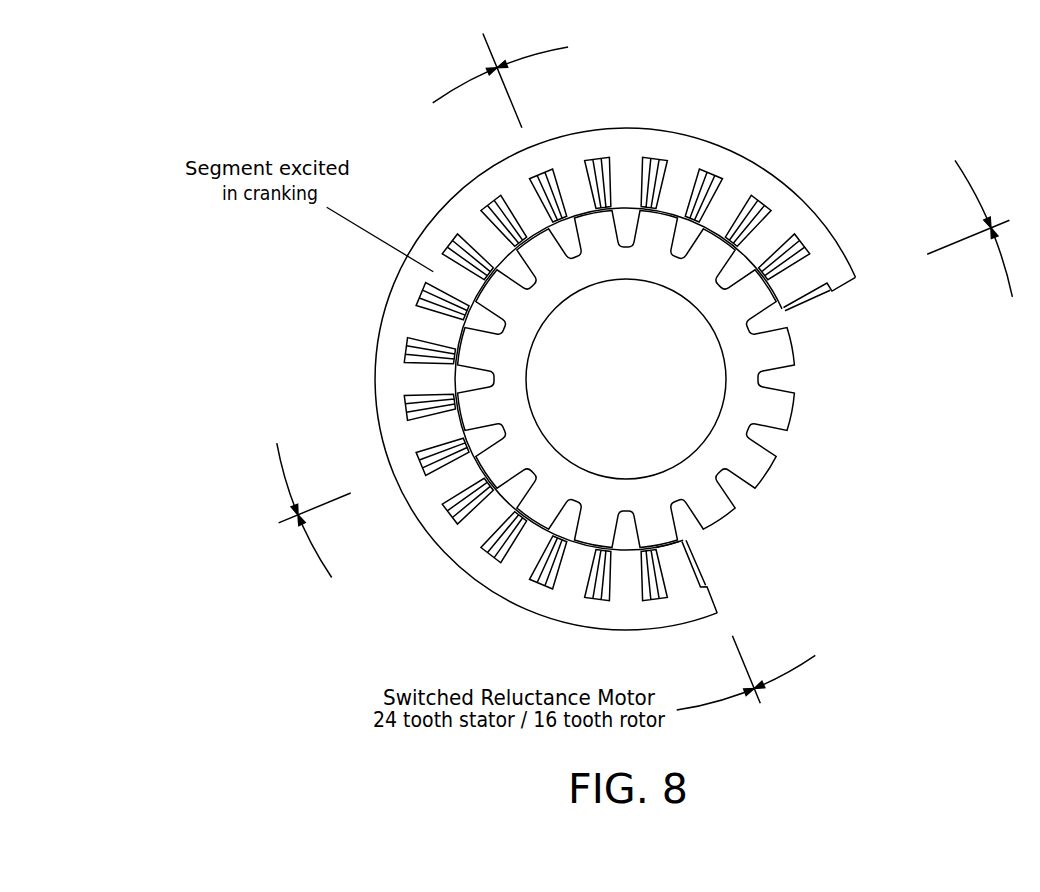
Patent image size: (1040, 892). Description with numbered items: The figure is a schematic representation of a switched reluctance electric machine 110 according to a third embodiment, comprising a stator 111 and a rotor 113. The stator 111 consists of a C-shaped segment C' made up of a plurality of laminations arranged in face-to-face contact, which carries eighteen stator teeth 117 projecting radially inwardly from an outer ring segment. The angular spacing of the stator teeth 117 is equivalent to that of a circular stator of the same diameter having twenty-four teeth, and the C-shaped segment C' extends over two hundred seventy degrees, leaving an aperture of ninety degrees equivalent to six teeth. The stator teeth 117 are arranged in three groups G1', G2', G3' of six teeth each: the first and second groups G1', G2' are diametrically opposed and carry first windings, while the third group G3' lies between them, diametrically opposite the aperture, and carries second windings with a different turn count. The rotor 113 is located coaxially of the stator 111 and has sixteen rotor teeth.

The switched reluctance electric machine 110 is at (645, 372).
The stator 111 is at (645, 372).
The rotor 113 is at (837, 435).
The stator teeth 117 is at (678, 569).
The first group G1' is at (723, 165).
The second group G2' is at (628, 592).
The third group G3' is at (424, 373).
The C-shaped segment C' is at (344, 414).